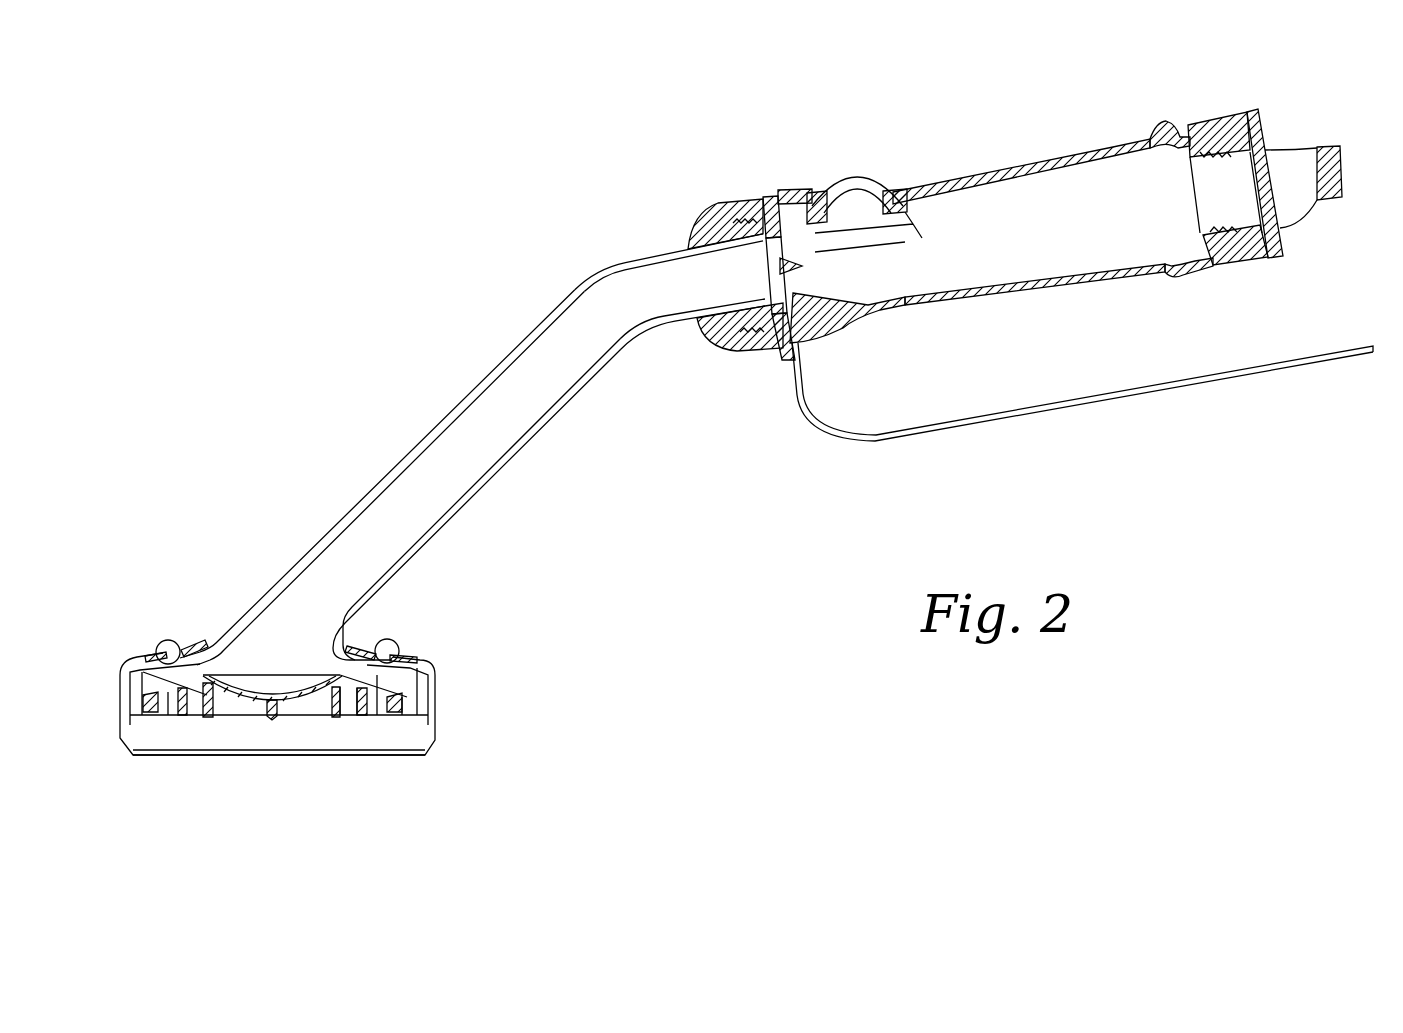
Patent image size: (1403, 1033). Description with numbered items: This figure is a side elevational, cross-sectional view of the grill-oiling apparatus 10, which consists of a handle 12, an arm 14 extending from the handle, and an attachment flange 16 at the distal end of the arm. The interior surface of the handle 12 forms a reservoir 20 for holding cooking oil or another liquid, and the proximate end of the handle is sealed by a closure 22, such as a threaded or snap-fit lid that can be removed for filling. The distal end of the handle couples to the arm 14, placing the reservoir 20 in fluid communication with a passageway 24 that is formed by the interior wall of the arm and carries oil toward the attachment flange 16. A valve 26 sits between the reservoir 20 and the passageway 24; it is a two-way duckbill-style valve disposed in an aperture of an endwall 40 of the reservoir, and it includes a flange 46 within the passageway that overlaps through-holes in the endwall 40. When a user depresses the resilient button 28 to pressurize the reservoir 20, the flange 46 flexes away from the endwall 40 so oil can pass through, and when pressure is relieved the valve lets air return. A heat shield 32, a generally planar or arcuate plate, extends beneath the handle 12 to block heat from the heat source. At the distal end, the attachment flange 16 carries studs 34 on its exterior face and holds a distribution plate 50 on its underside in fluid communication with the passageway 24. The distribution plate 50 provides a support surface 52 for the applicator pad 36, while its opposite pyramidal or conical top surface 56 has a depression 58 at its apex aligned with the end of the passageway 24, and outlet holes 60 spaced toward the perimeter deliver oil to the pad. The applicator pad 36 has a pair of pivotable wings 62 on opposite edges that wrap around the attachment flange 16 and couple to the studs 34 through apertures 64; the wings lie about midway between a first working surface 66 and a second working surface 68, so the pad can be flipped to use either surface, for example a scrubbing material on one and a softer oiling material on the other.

The grill-oiling apparatus 10 is at (356, 136).
The handle 12 is at (1020, 292).
The arm 14 is at (523, 453).
The attachment flange 16 is at (197, 638).
The reservoir 20 is at (1050, 203).
The closure 22 is at (1268, 262).
The passageway 24 is at (668, 282).
The valve 26 is at (745, 301).
The depressible button 28 is at (832, 190).
The heat shield 32 is at (1070, 417).
The studs 34 is at (164, 639).
The applicator pad 36 is at (243, 745).
The endwall 40 is at (790, 230).
The flange 46 is at (815, 316).
The distribution plate 50 is at (360, 632).
The support surface 52 is at (388, 716).
The top surface 56 is at (150, 658).
The depression 58 is at (272, 697).
The outlet holes 60 is at (192, 716).
The wings 62 is at (440, 690).
The apertures 64 is at (420, 660).
The first working surface 66 is at (305, 760).
The second working surface 68 is at (345, 716).